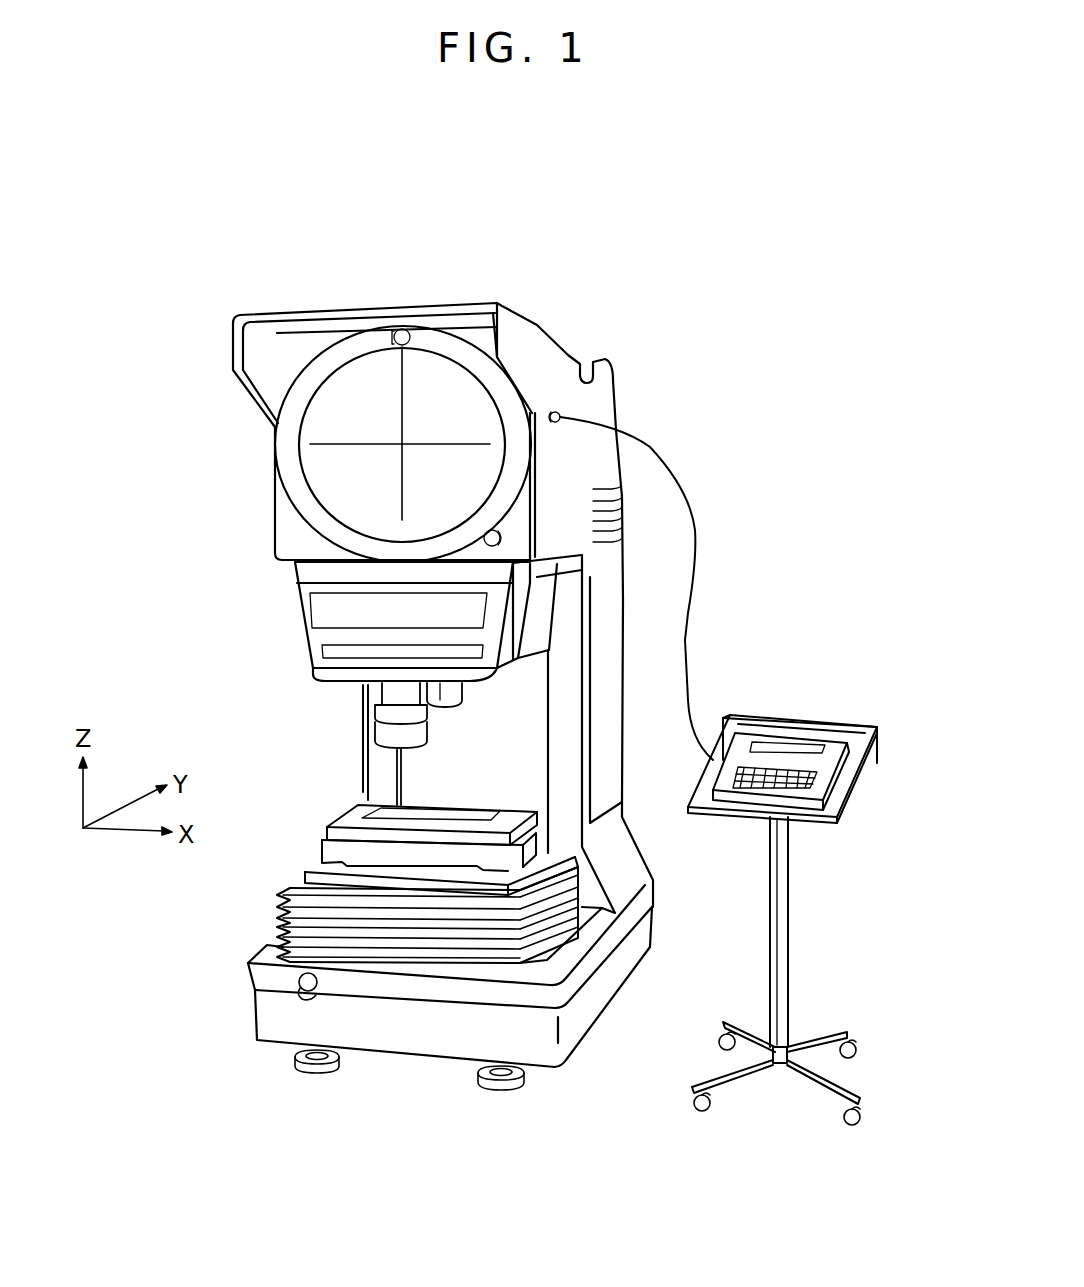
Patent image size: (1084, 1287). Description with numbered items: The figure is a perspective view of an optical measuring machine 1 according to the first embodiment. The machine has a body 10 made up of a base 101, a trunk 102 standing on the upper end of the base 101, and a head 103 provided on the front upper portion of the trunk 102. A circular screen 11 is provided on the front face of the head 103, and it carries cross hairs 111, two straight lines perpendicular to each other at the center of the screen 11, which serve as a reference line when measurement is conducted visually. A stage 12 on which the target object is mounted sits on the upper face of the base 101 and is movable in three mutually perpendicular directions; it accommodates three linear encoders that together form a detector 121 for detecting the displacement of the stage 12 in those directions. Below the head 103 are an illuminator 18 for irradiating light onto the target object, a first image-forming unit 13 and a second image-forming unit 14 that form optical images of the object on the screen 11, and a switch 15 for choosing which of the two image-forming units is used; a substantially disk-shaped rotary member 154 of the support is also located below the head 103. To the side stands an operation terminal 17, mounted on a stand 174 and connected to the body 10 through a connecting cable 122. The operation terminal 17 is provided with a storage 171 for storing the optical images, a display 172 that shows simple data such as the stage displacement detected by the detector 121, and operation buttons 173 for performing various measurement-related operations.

The optical measuring machine 1 is at (248, 258).
The body 10 is at (615, 400).
The screen 11 is at (365, 385).
The cross hairs 111 is at (405, 375).
The head 103 is at (298, 537).
The connecting cable 122 is at (693, 562).
The trunk 102 is at (610, 618).
The rotary member 154 is at (318, 670).
The illuminator 18 is at (343, 713).
The first image-forming unit 13 is at (457, 712).
The stage 12 is at (387, 815).
The second image-forming unit 14 is at (410, 755).
The switch 15 is at (462, 753).
The display 172 is at (787, 743).
The operation terminal 17 is at (837, 778).
The storage 171 is at (853, 803).
The operation buttons 173 is at (762, 777).
The stand 174 is at (788, 916).
The base 101 is at (588, 1008).
The detector 121 is at (320, 848).